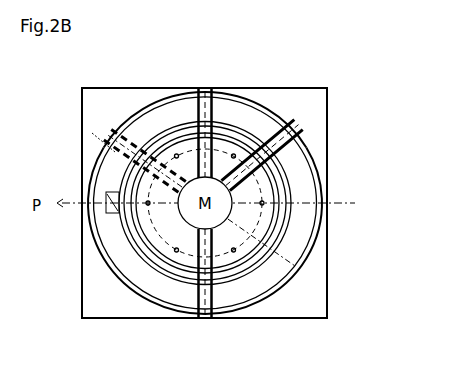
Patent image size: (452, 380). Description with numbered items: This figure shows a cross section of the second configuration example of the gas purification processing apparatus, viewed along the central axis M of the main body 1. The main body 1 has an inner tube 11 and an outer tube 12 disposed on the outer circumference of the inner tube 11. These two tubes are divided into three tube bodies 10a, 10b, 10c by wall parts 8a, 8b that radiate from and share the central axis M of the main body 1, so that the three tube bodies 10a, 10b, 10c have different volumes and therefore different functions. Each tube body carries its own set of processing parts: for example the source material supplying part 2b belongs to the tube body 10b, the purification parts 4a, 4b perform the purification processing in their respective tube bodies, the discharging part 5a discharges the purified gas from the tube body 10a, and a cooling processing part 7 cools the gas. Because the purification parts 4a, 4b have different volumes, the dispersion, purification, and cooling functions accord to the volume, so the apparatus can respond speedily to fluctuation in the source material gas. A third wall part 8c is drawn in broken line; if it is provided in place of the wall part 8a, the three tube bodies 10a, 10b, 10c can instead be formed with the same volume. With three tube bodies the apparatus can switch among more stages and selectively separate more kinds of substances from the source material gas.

The main body 1 is at (347, 88).
The source material supplying part 2b is at (268, 225).
The purification part 4a is at (178, 292).
The purification part 4b is at (244, 288).
The discharging part 5a is at (90, 243).
The cooling processing part 7 is at (243, 133).
The wall part 8a is at (198, 100).
The wall part 8b is at (275, 127).
The wall part 8c is at (138, 152).
The tube body 10a is at (140, 305).
The tube body 10b is at (306, 246).
The tube body 10c is at (228, 122).
The inner tube 11 is at (285, 168).
The outer tube 12 is at (307, 173).